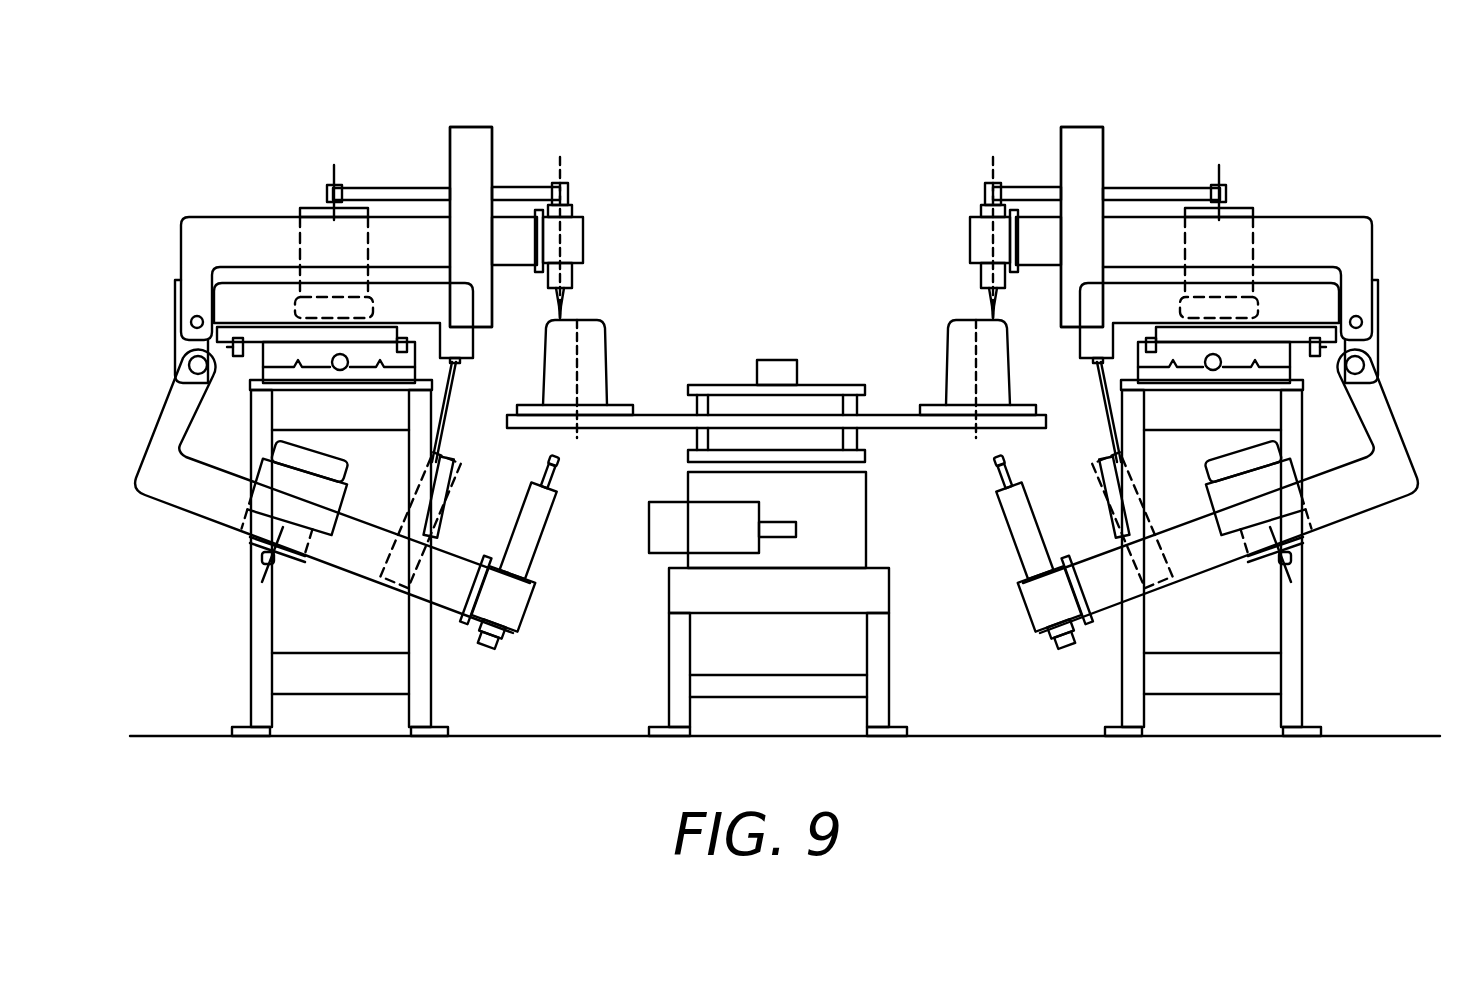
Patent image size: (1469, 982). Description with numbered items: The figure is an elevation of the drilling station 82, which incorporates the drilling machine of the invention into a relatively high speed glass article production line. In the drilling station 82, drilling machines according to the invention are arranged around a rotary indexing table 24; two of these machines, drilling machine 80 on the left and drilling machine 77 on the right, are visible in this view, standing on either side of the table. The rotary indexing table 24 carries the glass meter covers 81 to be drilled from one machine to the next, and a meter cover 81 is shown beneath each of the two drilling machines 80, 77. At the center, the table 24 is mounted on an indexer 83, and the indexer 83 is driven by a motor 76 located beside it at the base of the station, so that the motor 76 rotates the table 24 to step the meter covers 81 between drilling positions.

The drilling machine 80 is at (188, 217).
The drilling machine 77 is at (1367, 217).
The glass meter cover 81 is at (603, 320).
The drilling station 82 is at (841, 138).
The rotary indexing table 24 is at (905, 437).
The indexer 83 is at (868, 517).
The motor 76 is at (649, 548).